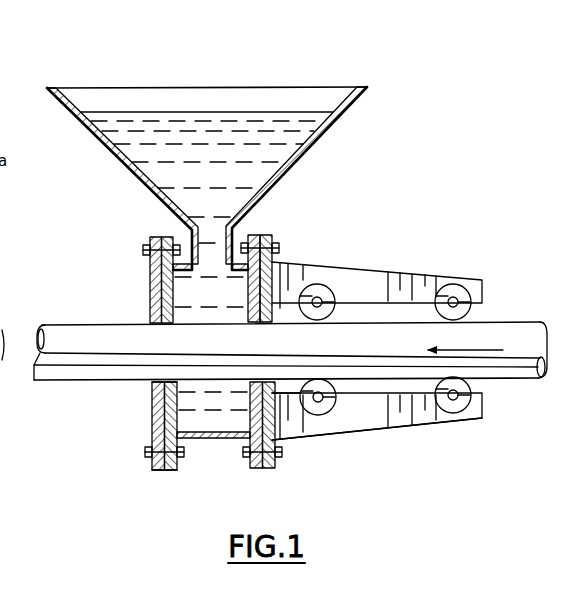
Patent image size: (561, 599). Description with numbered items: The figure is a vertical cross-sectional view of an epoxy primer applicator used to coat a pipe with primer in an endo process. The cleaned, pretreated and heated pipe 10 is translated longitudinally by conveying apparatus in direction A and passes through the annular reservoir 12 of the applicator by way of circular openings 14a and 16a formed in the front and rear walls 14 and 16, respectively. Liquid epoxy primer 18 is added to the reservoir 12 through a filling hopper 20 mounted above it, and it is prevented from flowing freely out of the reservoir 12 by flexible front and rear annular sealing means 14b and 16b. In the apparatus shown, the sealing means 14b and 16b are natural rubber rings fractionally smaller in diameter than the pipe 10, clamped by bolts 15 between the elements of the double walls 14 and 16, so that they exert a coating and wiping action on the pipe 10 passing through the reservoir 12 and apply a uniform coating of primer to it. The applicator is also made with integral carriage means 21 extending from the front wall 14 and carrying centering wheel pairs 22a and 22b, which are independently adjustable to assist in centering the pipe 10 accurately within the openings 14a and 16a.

The pipe 10 is at (496, 320).
The annular reservoir 12 is at (214, 452).
The front wall 14 is at (288, 412).
The circular opening 14a is at (292, 390).
The front annular sealing means 14b is at (268, 468).
The bolts 15 is at (150, 247).
The rear wall 16 is at (152, 424).
The circular opening 16a is at (152, 386).
The rear annular sealing means 16b is at (168, 470).
The liquid epoxy primer 18 is at (285, 150).
The filling hopper 20 is at (318, 92).
The carriage means 21 is at (410, 475).
The centering wheel pair 22a is at (450, 287).
The centering wheel pair 22b is at (326, 290).